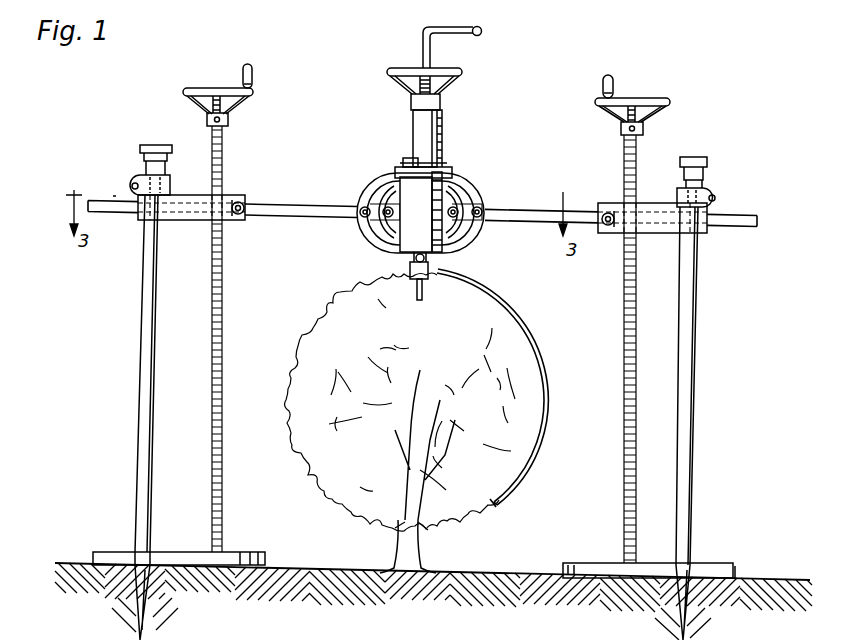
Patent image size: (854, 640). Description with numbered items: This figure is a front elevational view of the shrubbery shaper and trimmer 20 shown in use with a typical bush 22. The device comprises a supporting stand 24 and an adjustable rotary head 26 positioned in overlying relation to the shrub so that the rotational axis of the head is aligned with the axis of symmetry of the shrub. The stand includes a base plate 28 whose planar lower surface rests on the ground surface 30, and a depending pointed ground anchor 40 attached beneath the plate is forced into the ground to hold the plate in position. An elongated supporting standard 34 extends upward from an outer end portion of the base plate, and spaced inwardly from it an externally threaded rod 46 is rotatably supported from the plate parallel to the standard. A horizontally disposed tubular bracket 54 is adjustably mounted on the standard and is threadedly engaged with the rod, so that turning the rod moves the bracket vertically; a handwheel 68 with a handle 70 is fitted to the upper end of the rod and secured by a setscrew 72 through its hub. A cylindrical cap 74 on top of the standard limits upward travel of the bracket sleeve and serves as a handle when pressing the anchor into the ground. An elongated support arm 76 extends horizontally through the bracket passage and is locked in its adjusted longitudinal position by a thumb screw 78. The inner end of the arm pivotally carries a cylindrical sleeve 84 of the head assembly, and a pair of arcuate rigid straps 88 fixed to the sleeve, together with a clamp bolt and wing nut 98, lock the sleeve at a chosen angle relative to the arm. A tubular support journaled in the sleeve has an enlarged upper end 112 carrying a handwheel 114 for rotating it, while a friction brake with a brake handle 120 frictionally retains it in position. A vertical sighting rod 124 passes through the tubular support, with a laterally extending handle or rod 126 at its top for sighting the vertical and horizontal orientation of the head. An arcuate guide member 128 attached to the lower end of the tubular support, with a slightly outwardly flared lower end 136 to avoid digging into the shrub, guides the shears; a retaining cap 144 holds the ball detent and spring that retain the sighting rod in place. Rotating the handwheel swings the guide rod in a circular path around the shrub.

The shrubbery shaper and trimmer 20 is at (326, 134).
The bush 22 is at (344, 478).
The supporting stand 24 is at (411, 331).
The adjustable rotary head 26 is at (450, 161).
The base plate 28 is at (237, 553).
The ground surface 30 is at (750, 590).
The supporting standard 34 is at (143, 465).
The pointed ground anchor 40 is at (146, 614).
The externally threaded rod 46 is at (222, 317).
The tubular bracket 54 is at (422, 219).
The handwheel 68 is at (413, 92).
The handle 70 is at (248, 64).
The setscrew 72 is at (226, 122).
The cylindrical cap 74 is at (150, 146).
The support arm 76 is at (285, 214).
The thumb screw 78 is at (240, 200).
The cylindrical sleeve 84 is at (452, 183).
The arcuate rigid straps 88 is at (470, 194).
The wing nut 98 is at (487, 212).
The enlarged upper end 112 is at (438, 128).
The handwheel 114 is at (455, 78).
The brake handle 120 is at (405, 160).
The sighting rod 124 is at (432, 60).
The laterally extending handle or rod 126 is at (481, 29).
The arcuate guide member 128 is at (505, 402).
The outwardly flared lower end 136 is at (493, 499).
The retaining cap 144 is at (427, 262).